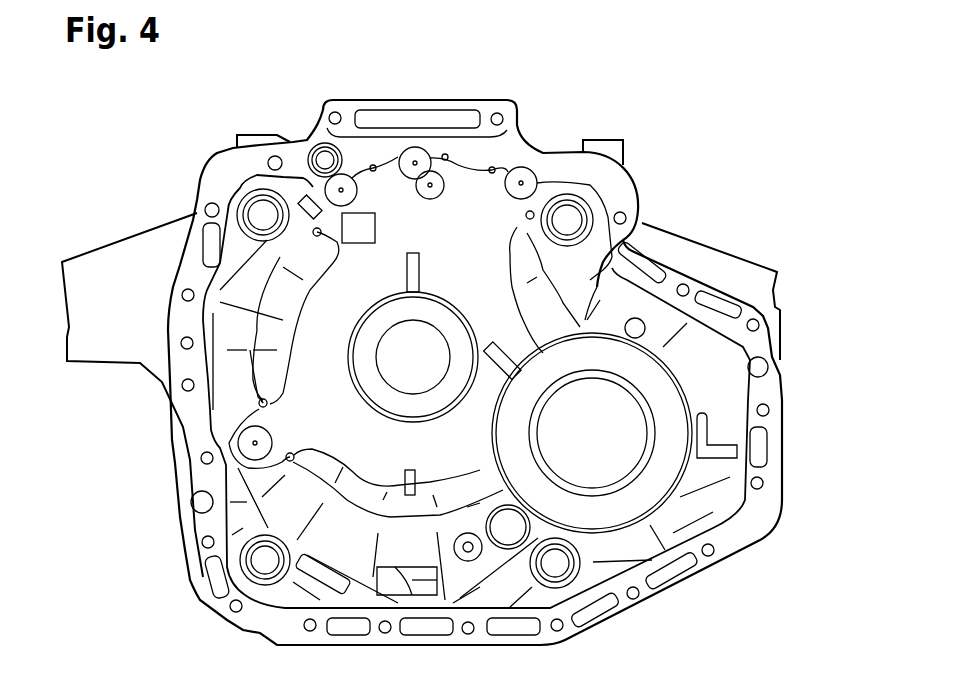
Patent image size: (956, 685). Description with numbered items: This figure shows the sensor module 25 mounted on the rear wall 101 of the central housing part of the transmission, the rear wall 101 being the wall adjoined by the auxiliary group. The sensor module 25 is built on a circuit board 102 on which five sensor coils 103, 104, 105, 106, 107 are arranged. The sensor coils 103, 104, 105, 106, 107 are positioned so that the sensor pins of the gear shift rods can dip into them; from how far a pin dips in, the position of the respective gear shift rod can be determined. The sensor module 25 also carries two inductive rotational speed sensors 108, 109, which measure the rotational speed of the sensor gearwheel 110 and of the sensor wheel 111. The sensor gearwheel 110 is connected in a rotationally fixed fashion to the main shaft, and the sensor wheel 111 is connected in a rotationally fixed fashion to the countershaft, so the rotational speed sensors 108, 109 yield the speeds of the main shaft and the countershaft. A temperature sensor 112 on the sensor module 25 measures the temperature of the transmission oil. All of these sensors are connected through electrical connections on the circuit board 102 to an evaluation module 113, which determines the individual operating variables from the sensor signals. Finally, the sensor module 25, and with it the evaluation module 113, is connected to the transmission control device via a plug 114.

The sensor module 25 is at (289, 130).
The rear wall 101 is at (642, 222).
The circuit board 102 is at (317, 362).
The sensor coil 103 is at (250, 443).
The sensor coil 104 is at (341, 188).
The sensor coil 105 is at (413, 162).
The sensor coil 106 is at (430, 185).
The sensor coil 107 is at (522, 183).
The inductive rotational speed sensor 108 is at (415, 262).
The inductive rotational speed sensor 109 is at (497, 336).
The sensor gearwheel 110 is at (423, 402).
The sensor wheel 111 is at (700, 427).
The temperature sensor 112 is at (405, 470).
The evaluation module 113 is at (356, 244).
The plug 114 is at (310, 207).